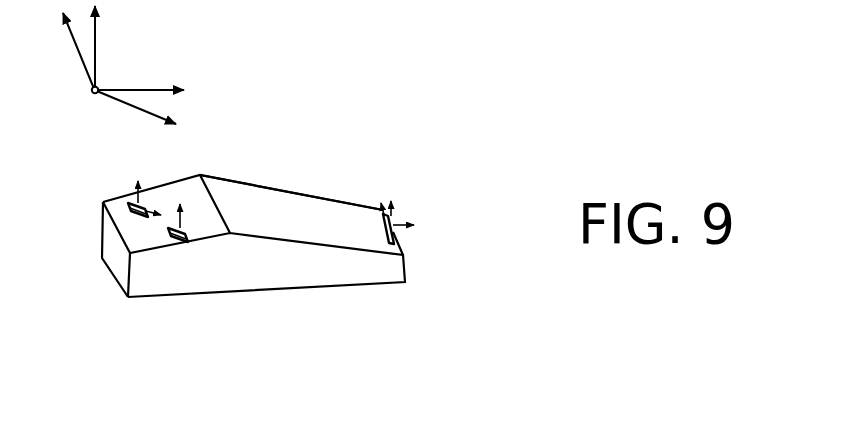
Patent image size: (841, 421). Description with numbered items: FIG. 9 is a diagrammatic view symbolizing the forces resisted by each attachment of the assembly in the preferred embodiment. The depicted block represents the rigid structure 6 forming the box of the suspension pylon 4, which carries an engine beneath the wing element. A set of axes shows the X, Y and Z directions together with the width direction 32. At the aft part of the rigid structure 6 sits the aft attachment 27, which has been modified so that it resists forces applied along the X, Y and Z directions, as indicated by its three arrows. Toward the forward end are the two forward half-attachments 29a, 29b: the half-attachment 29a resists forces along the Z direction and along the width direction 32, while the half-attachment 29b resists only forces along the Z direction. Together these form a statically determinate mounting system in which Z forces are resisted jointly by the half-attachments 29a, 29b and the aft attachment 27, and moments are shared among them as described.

The suspension pylon 4 is at (316, 168).
The rigid structure 6 is at (264, 186).
The aft attachment 27 is at (398, 230).
The forward half-attachment 29a is at (128, 213).
The forward half-attachment 29b is at (168, 239).
The width direction 32 is at (133, 110).